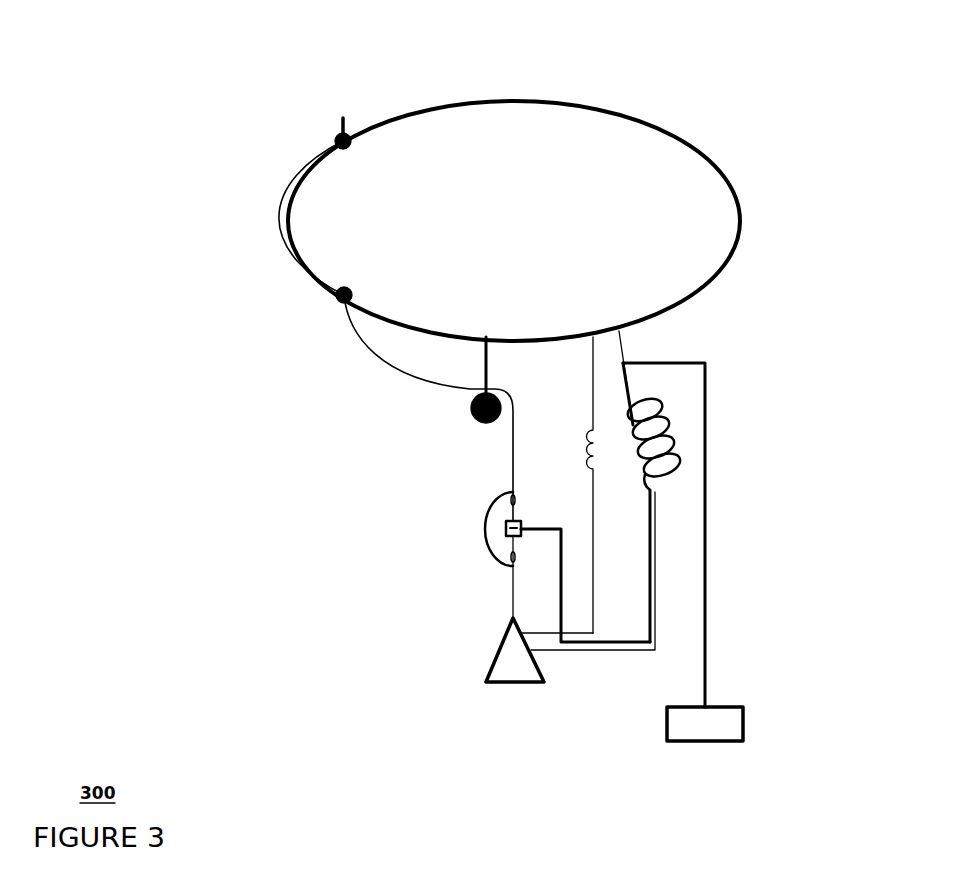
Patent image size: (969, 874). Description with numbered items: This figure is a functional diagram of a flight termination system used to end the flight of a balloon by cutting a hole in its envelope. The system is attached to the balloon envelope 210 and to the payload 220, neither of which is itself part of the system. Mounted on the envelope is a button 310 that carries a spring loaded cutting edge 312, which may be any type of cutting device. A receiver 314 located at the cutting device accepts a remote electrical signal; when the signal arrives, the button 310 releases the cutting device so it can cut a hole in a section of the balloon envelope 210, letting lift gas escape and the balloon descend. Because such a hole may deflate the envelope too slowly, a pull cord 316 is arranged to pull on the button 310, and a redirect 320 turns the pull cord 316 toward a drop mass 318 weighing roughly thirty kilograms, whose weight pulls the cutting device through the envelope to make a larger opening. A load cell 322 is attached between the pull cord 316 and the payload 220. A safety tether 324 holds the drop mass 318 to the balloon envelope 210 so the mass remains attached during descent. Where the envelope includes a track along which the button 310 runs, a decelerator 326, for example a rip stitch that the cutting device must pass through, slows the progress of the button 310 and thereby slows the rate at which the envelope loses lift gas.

The balloon envelope 210 is at (462, 102).
The payload 220 is at (743, 726).
The button 310 is at (338, 132).
The spring loaded cutting edge 312 is at (352, 153).
The receiver 314 is at (340, 120).
The pull cord 316 is at (487, 527).
The drop mass 318 is at (493, 662).
The redirect 320 is at (486, 423).
The load cell 322 is at (506, 528).
The safety tether 324 is at (625, 343).
The decelerator 326 is at (592, 597).